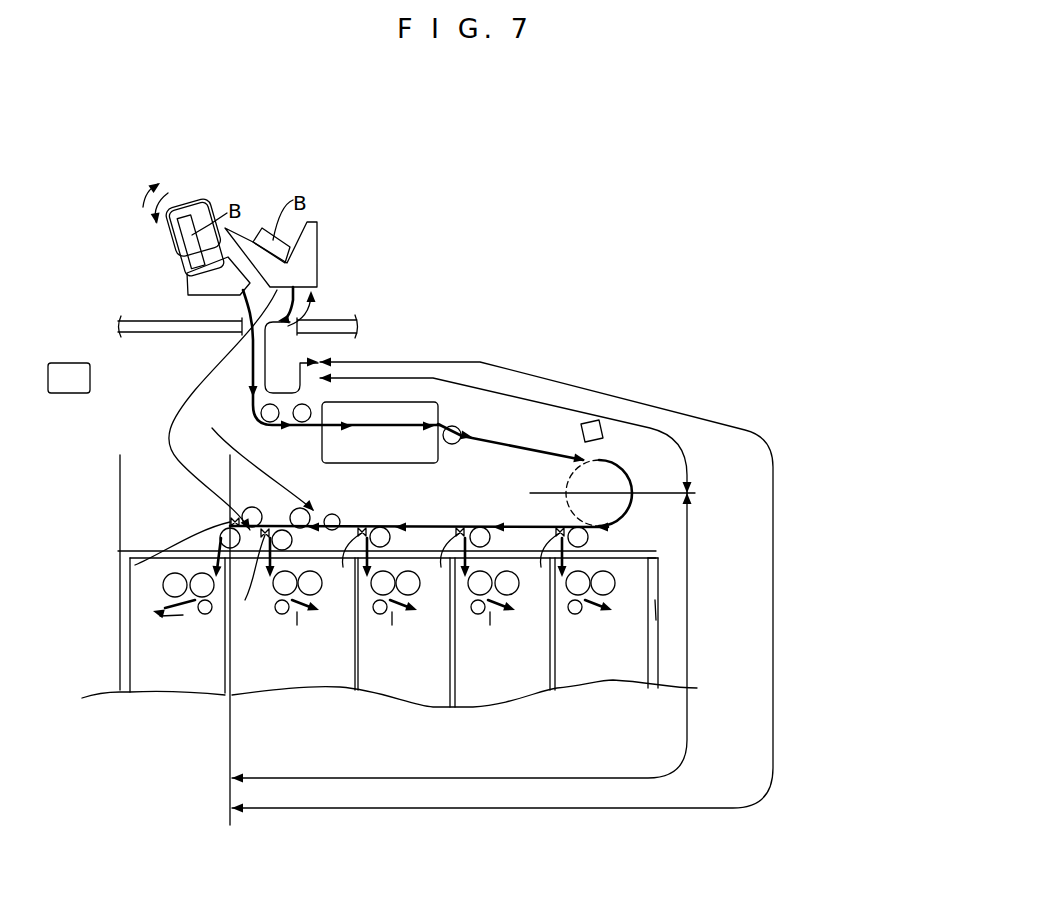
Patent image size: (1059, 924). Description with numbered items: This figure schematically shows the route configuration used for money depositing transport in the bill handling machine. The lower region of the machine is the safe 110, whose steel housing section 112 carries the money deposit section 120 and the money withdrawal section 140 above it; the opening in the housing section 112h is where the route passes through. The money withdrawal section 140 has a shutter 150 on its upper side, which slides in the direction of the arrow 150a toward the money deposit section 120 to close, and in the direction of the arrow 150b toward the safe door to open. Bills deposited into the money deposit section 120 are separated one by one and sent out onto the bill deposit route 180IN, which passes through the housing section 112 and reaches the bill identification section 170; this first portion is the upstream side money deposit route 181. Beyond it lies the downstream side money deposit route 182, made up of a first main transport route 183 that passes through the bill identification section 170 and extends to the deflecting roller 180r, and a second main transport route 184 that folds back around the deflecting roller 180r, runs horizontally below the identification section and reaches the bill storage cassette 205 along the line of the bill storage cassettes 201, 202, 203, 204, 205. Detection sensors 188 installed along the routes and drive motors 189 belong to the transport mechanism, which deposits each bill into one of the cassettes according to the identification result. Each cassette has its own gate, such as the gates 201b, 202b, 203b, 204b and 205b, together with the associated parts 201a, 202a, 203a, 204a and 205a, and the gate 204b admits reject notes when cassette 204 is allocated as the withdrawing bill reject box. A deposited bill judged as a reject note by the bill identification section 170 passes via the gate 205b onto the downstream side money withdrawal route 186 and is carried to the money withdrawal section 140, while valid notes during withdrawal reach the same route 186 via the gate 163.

The safe 110 is at (672, 610).
The housing section 112 is at (175, 328).
The platen hole 112h is at (247, 320).
The money deposit section 120 is at (310, 238).
The money withdrawal section 140 is at (193, 287).
The shutter 150 is at (190, 192).
The arrow 150a is at (157, 180).
The arrow 150b is at (131, 217).
The gate 163 is at (322, 508).
The bill identification section 170 is at (373, 463).
The bill deposit route 180IN is at (363, 424).
The deflecting roller 180r is at (587, 480).
The upstream side money deposit route 181 is at (267, 378).
The downstream side money deposit route 182 is at (770, 447).
The first main transport route 183 is at (485, 392).
The second main transport route 184 is at (688, 635).
The downstream side money withdrawal route 186 is at (168, 432).
The detection sensor 188 is at (589, 422).
The drive motor 189 is at (73, 378).
The bill storage cassette 201 is at (633, 678).
The cassette top edge 201a is at (650, 558).
The gate 201b is at (541, 567).
The bill storage cassette 202 is at (472, 687).
The cassette feed roller 202a is at (490, 612).
The cassette feed path 202b is at (441, 567).
The bill storage cassette 203 is at (430, 682).
The cassette feed roller 203a is at (392, 612).
The cassette feed path 203b is at (343, 567).
The bill storage cassette 204 is at (340, 688).
The cassette feed roller 204a is at (297, 612).
The gate 204b is at (245, 600).
The bill storage cassette 205 is at (160, 682).
The cassette feed roller 205a is at (160, 616).
The gate 205b is at (135, 565).